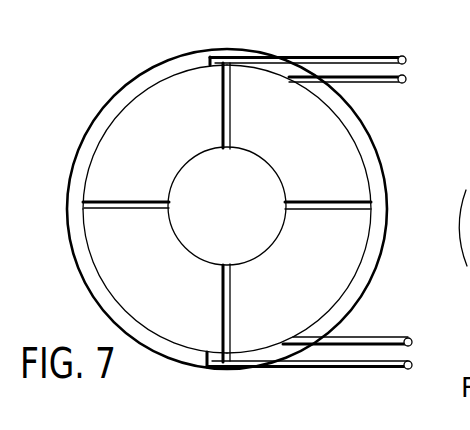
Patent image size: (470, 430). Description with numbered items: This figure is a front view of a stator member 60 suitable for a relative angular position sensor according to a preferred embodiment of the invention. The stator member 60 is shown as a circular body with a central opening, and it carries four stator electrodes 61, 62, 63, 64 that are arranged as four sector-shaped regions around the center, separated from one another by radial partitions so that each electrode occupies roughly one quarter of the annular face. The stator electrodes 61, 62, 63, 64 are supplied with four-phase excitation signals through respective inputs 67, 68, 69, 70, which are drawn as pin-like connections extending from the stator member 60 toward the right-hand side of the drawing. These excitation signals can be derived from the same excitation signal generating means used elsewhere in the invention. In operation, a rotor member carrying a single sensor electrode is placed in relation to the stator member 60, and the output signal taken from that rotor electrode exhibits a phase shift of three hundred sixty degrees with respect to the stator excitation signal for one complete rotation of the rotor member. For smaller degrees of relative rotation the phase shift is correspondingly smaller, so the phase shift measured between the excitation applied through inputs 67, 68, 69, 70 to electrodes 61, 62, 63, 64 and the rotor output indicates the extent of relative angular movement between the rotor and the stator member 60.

The stator member 60 is at (392, 182).
The stator electrode 61 is at (312, 157).
The stator electrode 62 is at (306, 284).
The stator electrode 63 is at (168, 283).
The stator electrode 64 is at (162, 154).
The input 67 is at (397, 84).
The input 68 is at (367, 339).
The input 69 is at (413, 363).
The input 70 is at (388, 53).